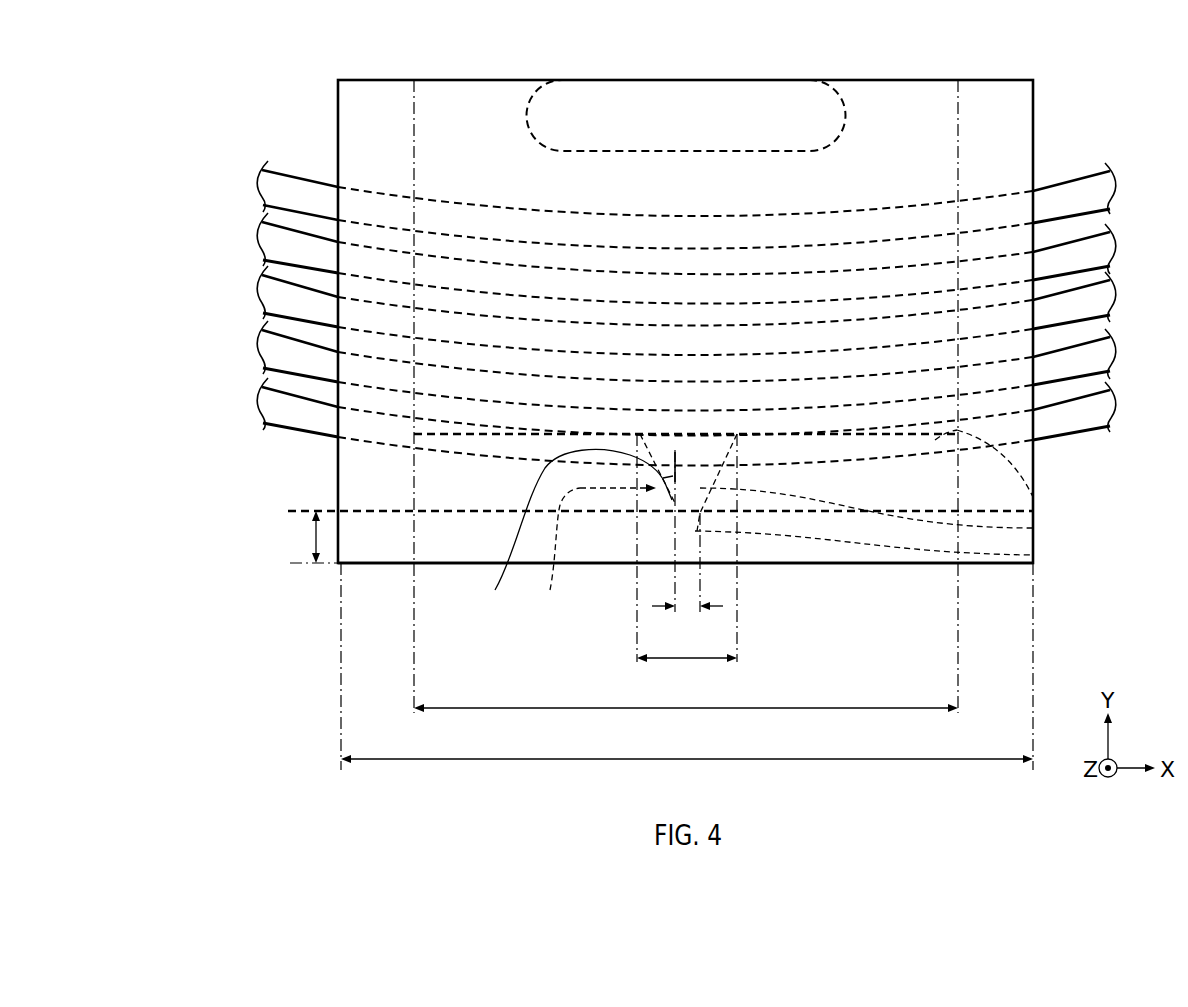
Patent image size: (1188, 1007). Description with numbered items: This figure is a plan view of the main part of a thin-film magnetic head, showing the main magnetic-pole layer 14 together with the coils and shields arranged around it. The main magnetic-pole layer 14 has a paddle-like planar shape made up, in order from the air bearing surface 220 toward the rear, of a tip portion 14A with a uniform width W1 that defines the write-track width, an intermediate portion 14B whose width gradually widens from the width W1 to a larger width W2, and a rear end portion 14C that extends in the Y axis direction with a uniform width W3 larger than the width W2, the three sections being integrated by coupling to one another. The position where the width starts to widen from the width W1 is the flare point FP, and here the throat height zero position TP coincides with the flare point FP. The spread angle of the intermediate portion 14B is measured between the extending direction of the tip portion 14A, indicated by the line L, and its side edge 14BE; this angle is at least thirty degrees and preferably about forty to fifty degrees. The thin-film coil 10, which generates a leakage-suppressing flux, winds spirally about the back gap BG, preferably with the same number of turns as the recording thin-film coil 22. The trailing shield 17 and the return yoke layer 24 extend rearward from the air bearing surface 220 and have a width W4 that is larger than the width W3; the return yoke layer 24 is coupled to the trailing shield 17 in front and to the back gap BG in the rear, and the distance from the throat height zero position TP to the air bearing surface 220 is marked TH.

The thin-film coil 10 is at (686, 291).
The thin-film coil 22 is at (310, 190).
The main magnetic-pole layer 14 is at (865, 500).
The tip portion 14A is at (899, 549).
The intermediate portion 14B is at (1033, 528).
The rear end portion 14C is at (1033, 497).
The side edge 14BE is at (632, 528).
The air bearing surface 220 is at (575, 567).
The return yoke layer 24 is at (685, 363).
The trailing shield 17 is at (873, 555).
The back gap BG is at (676, 108).
The throat height zero position TP is at (636, 493).
The flare point FP is at (283, 511).
The thickness TH is at (302, 537).
The reference line L is at (680, 467).
The first width W1 is at (688, 607).
The second width W2 is at (688, 659).
The third width W3 is at (688, 709).
The width W4 is at (688, 760).